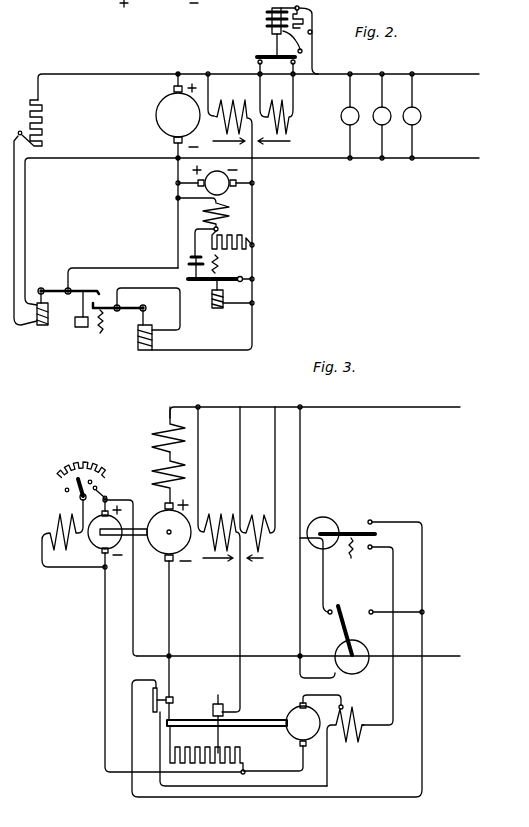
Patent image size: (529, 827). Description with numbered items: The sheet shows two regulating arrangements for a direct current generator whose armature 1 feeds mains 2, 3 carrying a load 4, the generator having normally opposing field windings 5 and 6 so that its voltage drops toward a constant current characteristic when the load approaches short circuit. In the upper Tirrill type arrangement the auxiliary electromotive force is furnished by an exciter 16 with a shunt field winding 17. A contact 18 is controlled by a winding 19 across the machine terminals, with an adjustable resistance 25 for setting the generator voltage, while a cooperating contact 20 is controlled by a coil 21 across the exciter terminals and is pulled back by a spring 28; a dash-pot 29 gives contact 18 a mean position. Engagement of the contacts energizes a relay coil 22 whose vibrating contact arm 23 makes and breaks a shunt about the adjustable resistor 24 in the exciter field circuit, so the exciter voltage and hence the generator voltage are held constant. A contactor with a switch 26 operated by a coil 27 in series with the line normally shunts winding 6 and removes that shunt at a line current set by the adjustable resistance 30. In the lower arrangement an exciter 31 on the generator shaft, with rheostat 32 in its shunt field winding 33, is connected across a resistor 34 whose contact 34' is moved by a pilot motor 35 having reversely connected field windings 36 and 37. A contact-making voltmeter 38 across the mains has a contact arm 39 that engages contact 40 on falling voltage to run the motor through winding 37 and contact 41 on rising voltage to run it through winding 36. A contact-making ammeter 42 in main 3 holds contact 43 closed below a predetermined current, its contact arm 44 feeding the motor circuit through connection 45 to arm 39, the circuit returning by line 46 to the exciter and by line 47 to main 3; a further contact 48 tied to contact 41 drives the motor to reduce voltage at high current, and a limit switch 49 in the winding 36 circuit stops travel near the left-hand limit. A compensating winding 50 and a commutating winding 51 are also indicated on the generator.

In FIG. 2, the armature 1 is at (160, 114).
In FIG. 3, the armature 1 is at (164, 517).
In FIG. 2, the main 2 is at (462, 74).
In FIG. 2, the main 3 is at (465, 158).
In FIG. 3, the main 3 is at (273, 655).
In FIG. 2, the load 4 is at (421, 117).
In FIG. 2, the shunt field winding 5 is at (229, 104).
In FIG. 3, the shunt field winding 5 is at (215, 513).
In FIG. 2, the differential series winding 6 is at (282, 124).
In FIG. 3, the differential series winding 6 is at (258, 514).
In FIG. 2, the exciter 16 is at (218, 184).
In FIG. 2, the shunt field winding 17 is at (229, 212).
In FIG. 2, the contact 18 is at (92, 292).
In FIG. 2, the winding 19 is at (34, 318).
In FIG. 2, the cooperating contact 20 is at (99, 333).
In FIG. 2, the coil 21 is at (142, 352).
In FIG. 2, the relay coil 22 is at (212, 303).
In FIG. 2, the vibrating contact arm 23 is at (221, 277).
In FIG. 2, the adjustable resistor 24 is at (236, 236).
In FIG. 2, the adjustable resistance 25 is at (45, 133).
In FIG. 2, the switch 26 is at (257, 56).
In FIG. 2, the coil 27 is at (268, 29).
In FIG. 2, the spring 28 is at (105, 320).
In FIG. 2, the dash-pot 29 is at (78, 328).
In FIG. 2, the adjustable resistance 30 is at (313, 13).
In FIG. 3, the exciter 31 is at (97, 543).
In FIG. 3, the rheostat 32 is at (83, 465).
In FIG. 3, the shunt field winding 33 is at (53, 514).
In FIG. 3, the resistor 34 is at (219, 750).
In FIG. 3, the contact 34' is at (200, 724).
In FIG. 3, the pilot motor 35 is at (295, 713).
In FIG. 3, the field winding 36 is at (340, 745).
In FIG. 3, the field winding 37 is at (360, 738).
In FIG. 3, the contact-making voltmeter 38 is at (323, 518).
In FIG. 3, the contact arm 39 is at (352, 528).
In FIG. 3, the contact 40 is at (372, 551).
In FIG. 3, the contact 41 is at (372, 518).
In FIG. 3, the contact-making ammeter 42 is at (358, 664).
In FIG. 3, the contact 43 is at (330, 618).
In FIG. 3, the contact arm 44 is at (355, 630).
In FIG. 3, the connection 45 is at (323, 590).
In FIG. 3, the line 46 is at (104, 670).
In FIG. 3, the line 47 is at (133, 637).
In FIG. 3, the contact 48 is at (370, 609).
In FIG. 3, the limit switch 49 is at (153, 707).
In FIG. 3, the compensating winding 50 is at (152, 473).
In FIG. 3, the commutating winding 51 is at (152, 436).